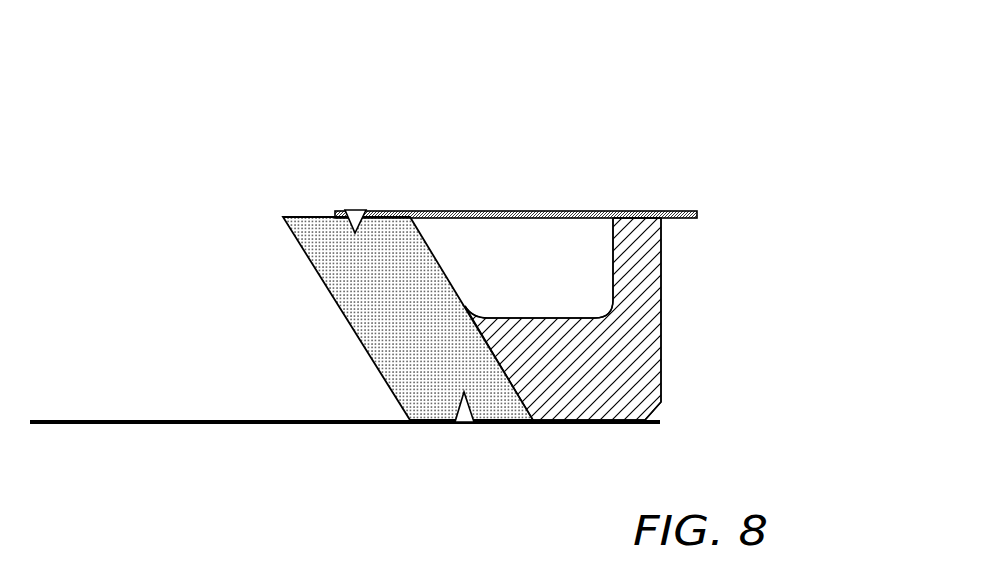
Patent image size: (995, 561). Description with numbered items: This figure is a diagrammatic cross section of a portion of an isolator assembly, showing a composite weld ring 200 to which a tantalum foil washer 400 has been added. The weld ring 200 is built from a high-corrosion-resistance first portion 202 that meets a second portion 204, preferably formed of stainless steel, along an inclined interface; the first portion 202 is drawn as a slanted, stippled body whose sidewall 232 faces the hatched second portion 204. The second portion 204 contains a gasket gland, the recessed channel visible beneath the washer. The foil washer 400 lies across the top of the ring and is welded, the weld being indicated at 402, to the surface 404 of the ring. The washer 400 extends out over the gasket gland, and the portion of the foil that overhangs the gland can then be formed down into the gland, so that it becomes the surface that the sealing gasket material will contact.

The composite weld ring 200 is at (647, 82).
The first portion 202 is at (330, 293).
The second portion 204 is at (662, 285).
The sidewall 232 is at (454, 292).
The tantalum foil washer 400 is at (495, 211).
The weld 402 is at (355, 210).
The surface 404 is at (305, 217).